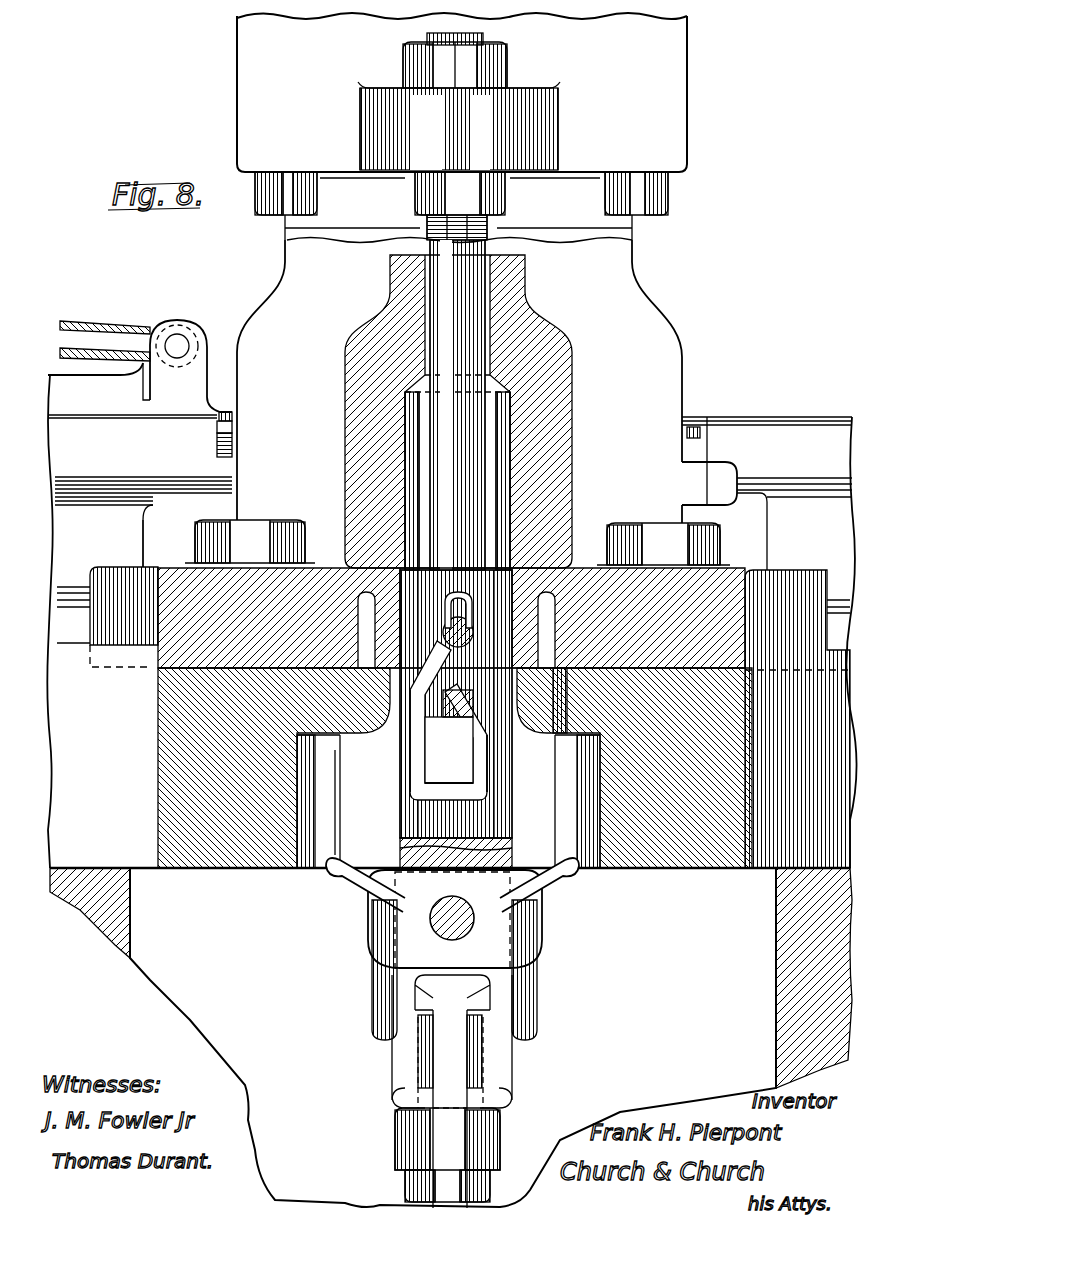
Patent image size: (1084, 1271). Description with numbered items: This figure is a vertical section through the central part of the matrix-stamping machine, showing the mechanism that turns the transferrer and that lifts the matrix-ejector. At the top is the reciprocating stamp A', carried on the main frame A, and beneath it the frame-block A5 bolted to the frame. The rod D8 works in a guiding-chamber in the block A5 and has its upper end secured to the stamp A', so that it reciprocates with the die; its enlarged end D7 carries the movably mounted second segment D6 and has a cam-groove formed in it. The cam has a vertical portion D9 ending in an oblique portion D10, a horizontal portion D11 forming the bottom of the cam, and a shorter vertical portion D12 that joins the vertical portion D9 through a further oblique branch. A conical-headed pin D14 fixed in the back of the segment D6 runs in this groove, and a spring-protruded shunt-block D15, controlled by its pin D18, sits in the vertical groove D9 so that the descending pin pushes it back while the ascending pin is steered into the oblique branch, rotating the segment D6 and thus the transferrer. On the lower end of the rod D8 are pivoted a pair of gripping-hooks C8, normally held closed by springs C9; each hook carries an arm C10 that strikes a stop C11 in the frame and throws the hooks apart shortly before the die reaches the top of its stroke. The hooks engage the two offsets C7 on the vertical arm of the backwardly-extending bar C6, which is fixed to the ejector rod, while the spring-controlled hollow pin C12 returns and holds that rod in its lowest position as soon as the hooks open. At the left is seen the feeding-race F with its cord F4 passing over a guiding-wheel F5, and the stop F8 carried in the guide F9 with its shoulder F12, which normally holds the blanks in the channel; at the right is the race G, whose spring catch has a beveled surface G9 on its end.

The reciprocating stamp A' is at (479, 126).
The main frame A is at (451, 1037).
The frame-block A5 is at (147, 578).
The cord F4 is at (135, 304).
The guiding-wheel F5 is at (212, 300).
The feeding-race F is at (180, 437).
The guide F9 is at (232, 416).
The shoulder F12 is at (232, 427).
The stop F8 is at (232, 437).
The race G is at (760, 417).
The beveled surface G9 is at (700, 428).
The rod D8 is at (488, 495).
The enlarged end of rod D7 is at (514, 562).
The vertical portion of cam-groove D9 is at (445, 612).
The conical-headed pin D14 is at (450, 614).
The second segment D6 is at (610, 542).
The oblique portion of cam-groove D10 is at (476, 742).
The horizontal portion of cam-groove D11 is at (490, 792).
The shorter vertical portion of cam-groove D12 is at (411, 762).
The shunt-block D15 is at (424, 705).
The pin D18 is at (474, 702).
The stop C11 is at (298, 733).
The springs C9 is at (368, 920).
The arm C10 is at (330, 872).
The offsets C7 is at (415, 1002).
The hollow pin C12 is at (483, 1062).
The gripping-hooks C8 is at (405, 1093).
The backwardly-extending bar C6 is at (500, 1132).